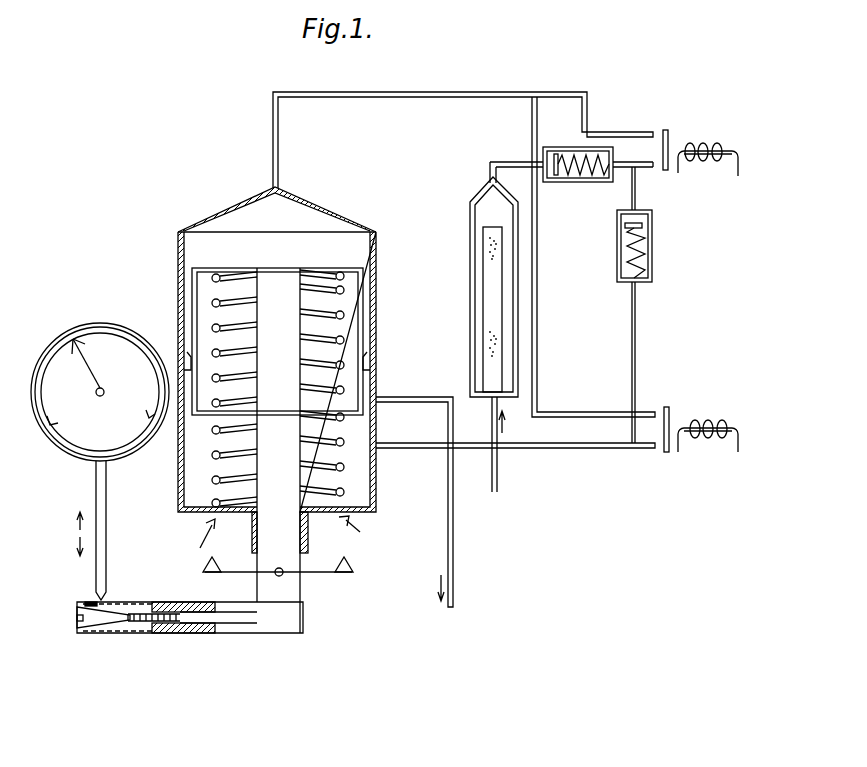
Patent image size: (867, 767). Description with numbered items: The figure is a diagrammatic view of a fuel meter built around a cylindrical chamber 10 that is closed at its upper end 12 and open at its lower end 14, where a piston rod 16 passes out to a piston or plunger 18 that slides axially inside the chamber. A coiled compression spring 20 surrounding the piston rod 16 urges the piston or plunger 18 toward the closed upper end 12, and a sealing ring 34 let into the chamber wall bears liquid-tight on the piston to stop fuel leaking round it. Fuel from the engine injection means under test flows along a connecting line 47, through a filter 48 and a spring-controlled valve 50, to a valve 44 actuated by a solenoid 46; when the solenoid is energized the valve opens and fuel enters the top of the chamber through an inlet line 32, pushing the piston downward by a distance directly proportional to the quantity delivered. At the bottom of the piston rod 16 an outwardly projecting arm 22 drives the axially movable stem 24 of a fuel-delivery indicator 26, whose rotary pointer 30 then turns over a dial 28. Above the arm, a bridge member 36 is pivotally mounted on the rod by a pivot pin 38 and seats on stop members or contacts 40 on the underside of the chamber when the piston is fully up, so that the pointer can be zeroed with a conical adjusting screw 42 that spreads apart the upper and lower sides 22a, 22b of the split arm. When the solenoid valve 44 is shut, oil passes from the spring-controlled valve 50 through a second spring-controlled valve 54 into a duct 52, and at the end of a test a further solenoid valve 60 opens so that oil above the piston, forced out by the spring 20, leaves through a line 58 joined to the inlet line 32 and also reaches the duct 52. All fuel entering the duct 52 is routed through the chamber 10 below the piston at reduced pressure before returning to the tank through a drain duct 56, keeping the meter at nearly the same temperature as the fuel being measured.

The cylindrical chamber 10 is at (174, 257).
The closed upper end 12 is at (224, 216).
The open lower end 14 is at (309, 547).
The piston rod 16 is at (293, 282).
The piston or plunger 18 is at (366, 272).
The coiled compression spring 20 is at (343, 395).
The outwardly projecting arm 22 is at (228, 630).
The upper side of the arm 22a is at (92, 602).
The lower side of the arm 22b is at (99, 636).
The axially movable stem 24 is at (106, 567).
The fuel-delivery indicator 26 is at (50, 448).
The dial 28 is at (58, 362).
The rotary pointer 30 is at (85, 362).
The inlet line 32 is at (425, 93).
The sealing ring 34 is at (374, 362).
The bridge member 36 is at (311, 574).
The pivot pin 38 is at (278, 578).
The stop members or contacts 40 is at (278, 544).
The conical adjusting screw 42 is at (76, 616).
The solenoid valve 44 is at (677, 129).
The solenoid 46 is at (722, 147).
The connecting line 47 is at (498, 476).
The filter 48 is at (497, 313).
The spring-controlled valve 50 is at (555, 148).
The duct 52 is at (588, 449).
The second spring-controlled valve 54 is at (653, 250).
The drain duct 56 is at (448, 496).
The line 58 is at (538, 272).
The solenoid valve 60 is at (686, 410).